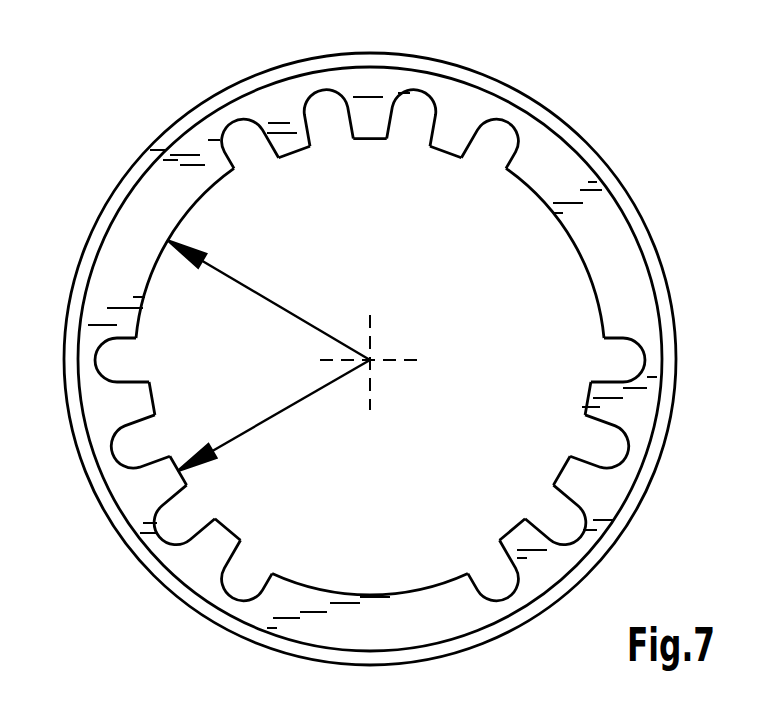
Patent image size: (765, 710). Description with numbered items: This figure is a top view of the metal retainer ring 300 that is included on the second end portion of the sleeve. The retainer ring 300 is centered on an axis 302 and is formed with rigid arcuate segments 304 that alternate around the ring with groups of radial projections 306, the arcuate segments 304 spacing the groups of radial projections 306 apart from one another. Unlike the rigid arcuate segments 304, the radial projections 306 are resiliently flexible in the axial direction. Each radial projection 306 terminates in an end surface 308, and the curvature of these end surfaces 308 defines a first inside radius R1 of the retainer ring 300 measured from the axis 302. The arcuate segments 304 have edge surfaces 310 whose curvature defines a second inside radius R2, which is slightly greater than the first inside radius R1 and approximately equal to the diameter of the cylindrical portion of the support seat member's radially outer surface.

The retainer ring 300 is at (118, 187).
The axis 302 is at (376, 372).
The arcuate segments 304 is at (170, 208).
The radial projections 306 is at (300, 148).
The end surfaces 308 is at (296, 152).
The edge surfaces 310 is at (153, 273).
The first inside radius R1 is at (277, 420).
The second inside radius R2 is at (313, 323).